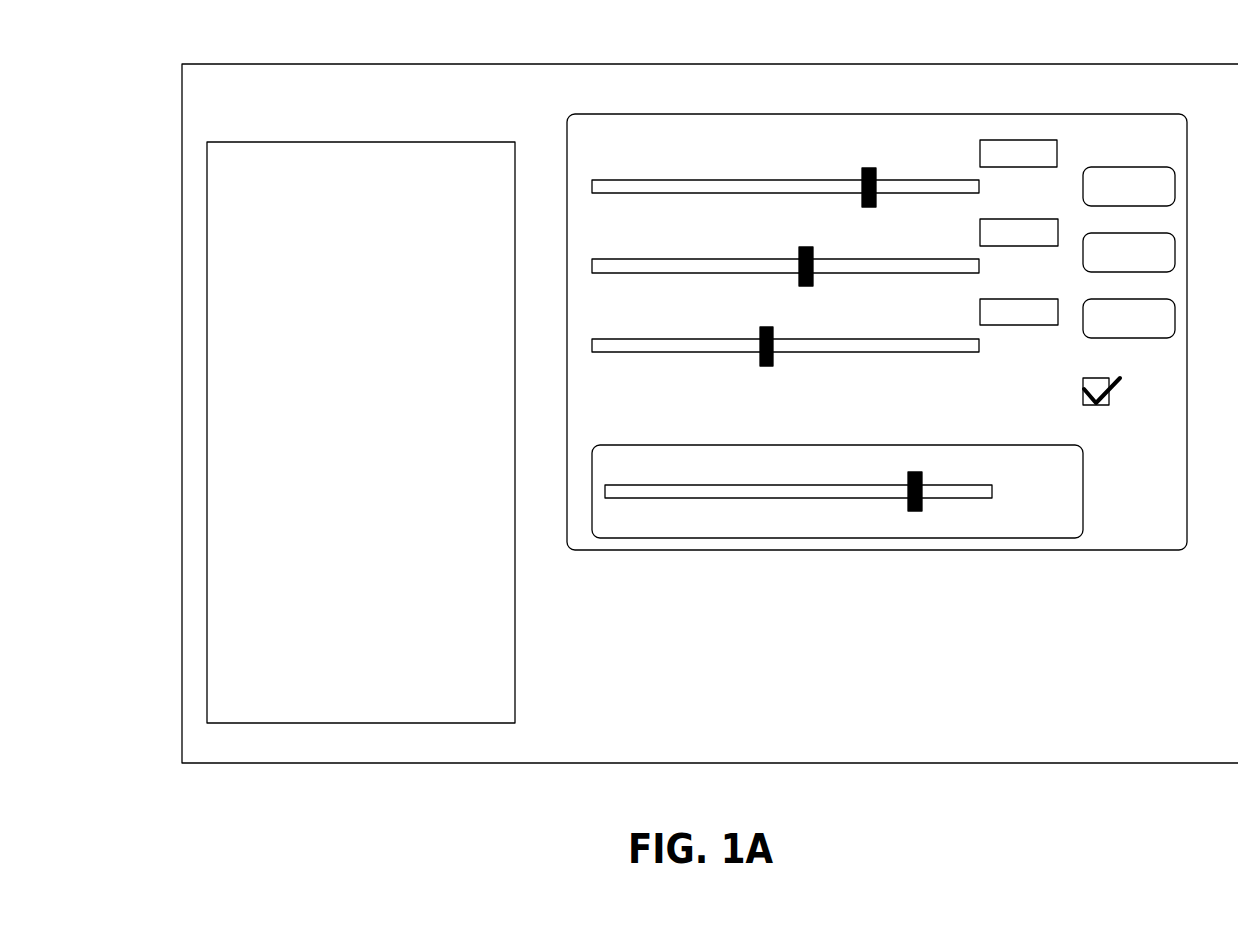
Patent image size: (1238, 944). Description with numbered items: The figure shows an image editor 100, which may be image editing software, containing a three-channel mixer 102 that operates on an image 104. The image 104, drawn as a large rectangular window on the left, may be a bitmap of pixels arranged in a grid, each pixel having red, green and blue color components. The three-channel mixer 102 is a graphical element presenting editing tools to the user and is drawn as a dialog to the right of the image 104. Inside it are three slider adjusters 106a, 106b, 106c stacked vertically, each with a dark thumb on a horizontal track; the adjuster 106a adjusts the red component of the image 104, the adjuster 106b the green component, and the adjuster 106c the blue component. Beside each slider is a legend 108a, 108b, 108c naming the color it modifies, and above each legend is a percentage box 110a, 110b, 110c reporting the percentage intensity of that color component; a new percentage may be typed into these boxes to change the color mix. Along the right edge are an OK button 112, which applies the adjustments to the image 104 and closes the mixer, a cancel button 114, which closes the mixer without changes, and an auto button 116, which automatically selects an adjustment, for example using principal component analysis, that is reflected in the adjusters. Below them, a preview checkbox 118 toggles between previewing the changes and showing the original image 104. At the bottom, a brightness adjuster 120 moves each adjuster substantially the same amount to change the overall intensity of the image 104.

The image editor 100 is at (318, 52).
The three-channel mixer 102 is at (745, 114).
The image 104 is at (382, 142).
The adjuster 106a is at (812, 179).
The adjuster 106b is at (720, 259).
The adjuster 106c is at (848, 339).
The legend 108a is at (1030, 184).
The legend 108b is at (1040, 259).
The legend 108c is at (1043, 343).
The percentage box 110a is at (980, 152).
The percentage box 110b is at (980, 232).
The percentage box 110c is at (980, 310).
The OK button 112 is at (1175, 188).
The cancel button 114 is at (1175, 254).
The auto button 116 is at (1175, 321).
The preview checkbox 118 is at (1110, 405).
The brightness adjuster 120 is at (810, 485).